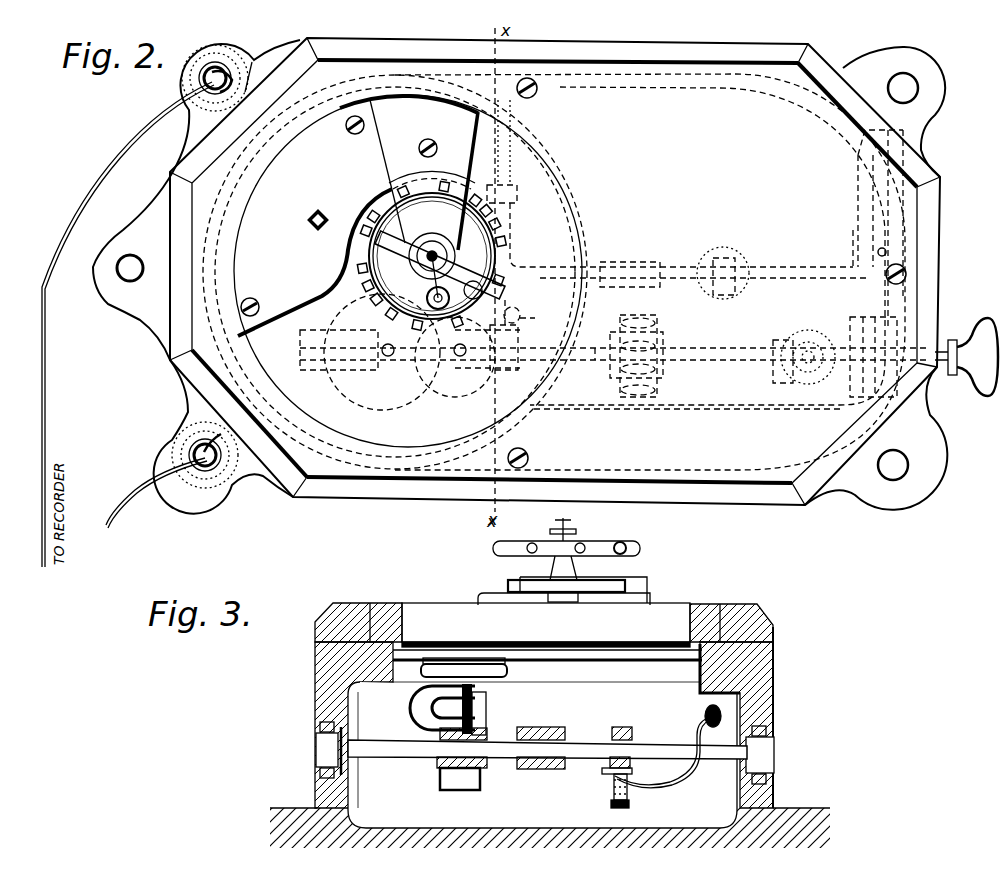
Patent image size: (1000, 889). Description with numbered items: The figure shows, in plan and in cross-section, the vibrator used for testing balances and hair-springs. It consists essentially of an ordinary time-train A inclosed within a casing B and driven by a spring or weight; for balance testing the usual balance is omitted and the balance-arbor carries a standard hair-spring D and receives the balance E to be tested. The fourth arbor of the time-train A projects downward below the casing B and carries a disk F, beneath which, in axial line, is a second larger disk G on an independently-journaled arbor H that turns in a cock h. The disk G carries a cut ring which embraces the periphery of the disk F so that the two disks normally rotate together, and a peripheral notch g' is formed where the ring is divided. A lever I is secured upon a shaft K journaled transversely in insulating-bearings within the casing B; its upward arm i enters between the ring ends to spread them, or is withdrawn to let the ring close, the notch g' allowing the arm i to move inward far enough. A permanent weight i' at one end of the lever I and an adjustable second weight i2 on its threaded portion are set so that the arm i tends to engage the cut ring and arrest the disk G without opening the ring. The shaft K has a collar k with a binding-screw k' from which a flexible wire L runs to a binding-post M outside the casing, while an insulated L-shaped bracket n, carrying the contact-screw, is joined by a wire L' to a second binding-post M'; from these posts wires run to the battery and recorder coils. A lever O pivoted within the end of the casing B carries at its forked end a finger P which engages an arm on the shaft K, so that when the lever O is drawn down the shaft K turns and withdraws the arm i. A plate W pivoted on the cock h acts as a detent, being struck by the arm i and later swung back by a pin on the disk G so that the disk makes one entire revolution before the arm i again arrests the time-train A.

In FIG. 2, the time-train A is at (554, 272).
In FIG. 3, the time-train A is at (547, 631).
In FIG. 2, the casing B is at (520, 276).
In FIG. 3, the casing B is at (773, 676).
In FIG. 3, the hair-spring D is at (525, 583).
In FIG. 2, the balance E is at (395, 213).
In FIG. 3, the balance E is at (598, 545).
In FIG. 3, the disk F is at (506, 667).
In FIG. 3, the disk G is at (497, 679).
In FIG. 3, the peripheral notch g' is at (493, 698).
In FIG. 3, the arbor H is at (460, 707).
In FIG. 3, the cock h is at (386, 711).
In FIG. 2, the lever I is at (522, 348).
In FIG. 3, the lever I is at (437, 770).
In FIG. 2, the arm i is at (524, 328).
In FIG. 2, the permanent weight i' is at (409, 352).
In FIG. 3, the permanent weight i' is at (460, 790).
In FIG. 2, the second weight i2 is at (650, 322).
In FIG. 2, the shaft K is at (508, 233).
In FIG. 3, the shaft K is at (548, 769).
In FIG. 2, the collar k is at (527, 199).
In FIG. 3, the collar k is at (621, 740).
In FIG. 3, the binding-screw k' is at (605, 788).
In FIG. 2, the flexible wire L is at (257, 63).
In FIG. 3, the flexible wire L is at (668, 756).
In FIG. 2, the wire L' is at (773, 421).
In FIG. 2, the binding-post M is at (137, 319).
In FIG. 2, the binding-post M' is at (163, 470).
In FIG. 2, the L-shaped bracket n is at (888, 322).
In FIG. 2, the lever O is at (800, 276).
In FIG. 2, the finger P is at (595, 266).
In FIG. 3, the plate W is at (452, 680).